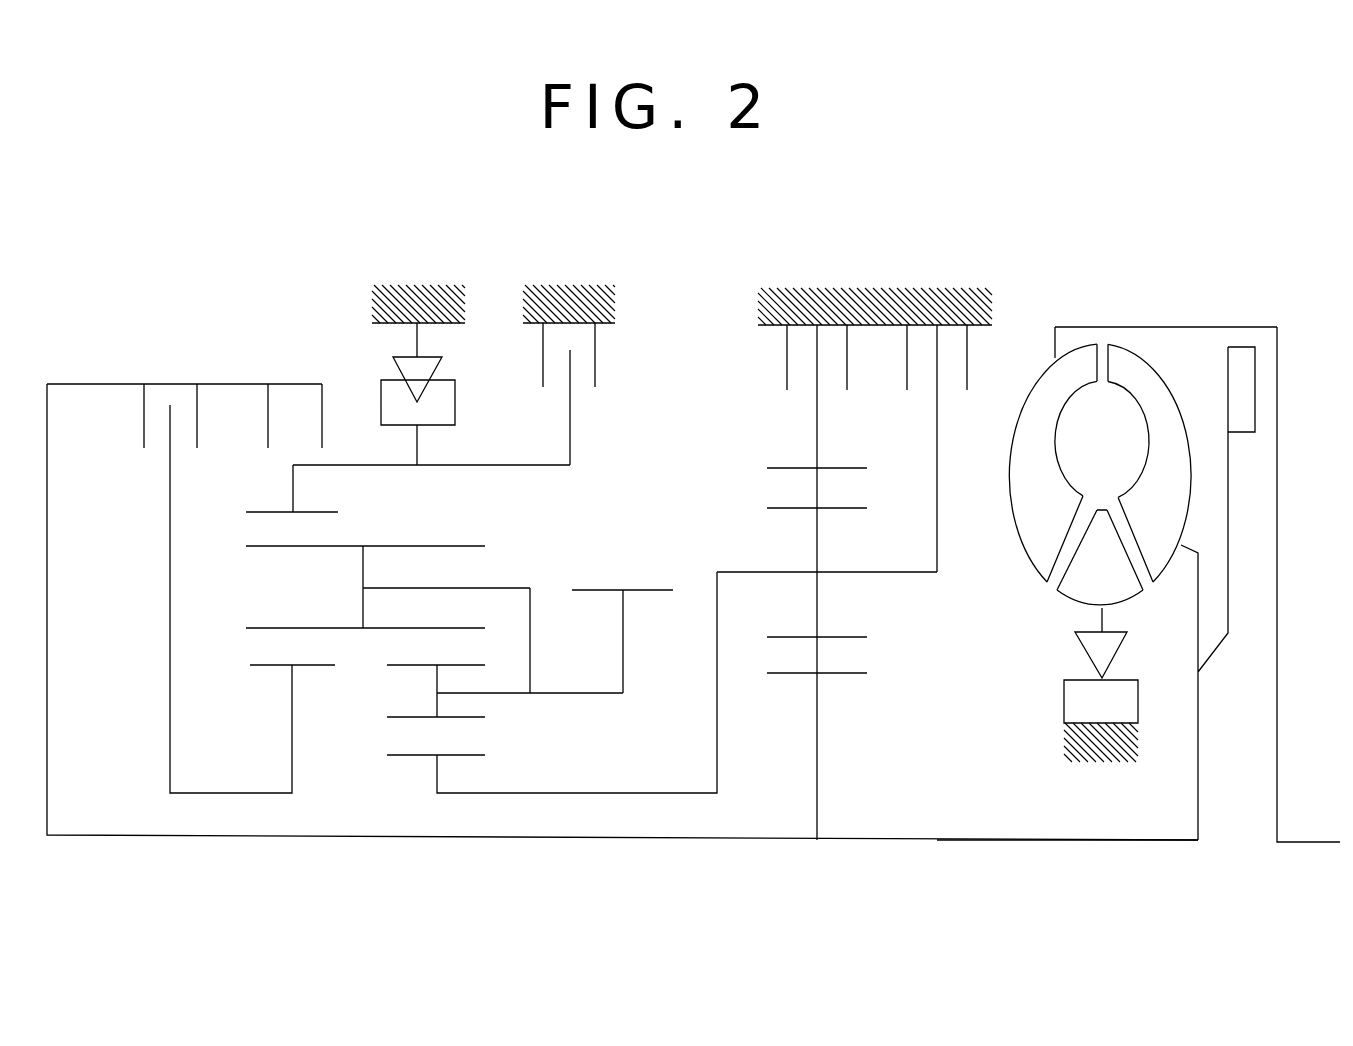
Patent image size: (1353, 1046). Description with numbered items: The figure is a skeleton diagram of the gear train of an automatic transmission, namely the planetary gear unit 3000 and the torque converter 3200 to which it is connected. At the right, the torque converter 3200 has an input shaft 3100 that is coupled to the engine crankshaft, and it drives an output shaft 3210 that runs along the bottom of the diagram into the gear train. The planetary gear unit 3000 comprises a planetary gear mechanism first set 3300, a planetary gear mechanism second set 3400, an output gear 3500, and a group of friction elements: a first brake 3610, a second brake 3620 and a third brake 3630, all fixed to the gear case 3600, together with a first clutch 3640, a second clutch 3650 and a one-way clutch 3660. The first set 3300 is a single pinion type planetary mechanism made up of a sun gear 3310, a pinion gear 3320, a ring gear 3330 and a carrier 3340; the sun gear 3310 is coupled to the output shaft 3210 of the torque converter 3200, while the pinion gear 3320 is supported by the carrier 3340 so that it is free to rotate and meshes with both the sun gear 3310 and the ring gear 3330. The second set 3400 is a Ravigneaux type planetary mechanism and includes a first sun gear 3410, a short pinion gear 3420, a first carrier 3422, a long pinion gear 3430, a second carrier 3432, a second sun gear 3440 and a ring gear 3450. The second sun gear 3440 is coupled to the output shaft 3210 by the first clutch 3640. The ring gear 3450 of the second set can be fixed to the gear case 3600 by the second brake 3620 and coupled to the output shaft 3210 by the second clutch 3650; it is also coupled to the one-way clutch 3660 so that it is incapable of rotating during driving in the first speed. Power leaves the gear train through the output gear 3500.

The planetary gear unit 3000 is at (848, 184).
The input shaft 3100 is at (1308, 843).
The torque converter 3200 is at (1132, 295).
The output shaft of the torque converter 3210 is at (962, 838).
The planetary gear mechanism first set 3300 is at (810, 848).
The sun gear S (UD) 3310 is at (832, 720).
The pinion gear 3320 is at (848, 627).
The ring gear R (UD) 3330 is at (827, 458).
The carrier C (UD) 3340 is at (937, 530).
The planetary gear mechanism second set 3400 is at (430, 847).
The sun gear S (D) 3410 is at (495, 755).
The short pinion gear 3420 is at (383, 673).
The carrier C (1) 3422 is at (507, 693).
The long pinion gear 3430 is at (482, 535).
The carrier C (2) 3432 is at (460, 588).
The sun gear S (S) 3440 is at (268, 673).
The ring gear R (1) (R (2)) 3450 is at (312, 493).
The output gear 3500 is at (655, 577).
The gear case 3600 is at (415, 283).
The B1 brake 3610 is at (952, 388).
The B2 brake 3620 is at (585, 385).
The B3 brake 3630 is at (782, 390).
The C1 clutch 3640 is at (137, 425).
The C2 clutch 3650 is at (260, 425).
The one-way clutch F 3660 is at (377, 363).